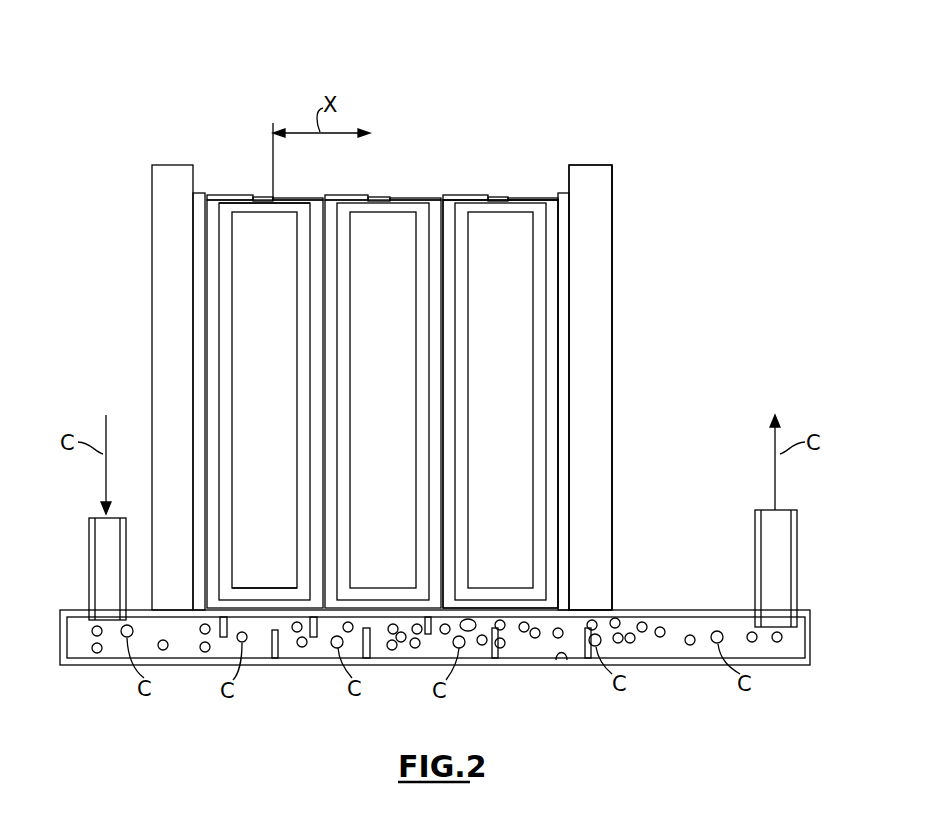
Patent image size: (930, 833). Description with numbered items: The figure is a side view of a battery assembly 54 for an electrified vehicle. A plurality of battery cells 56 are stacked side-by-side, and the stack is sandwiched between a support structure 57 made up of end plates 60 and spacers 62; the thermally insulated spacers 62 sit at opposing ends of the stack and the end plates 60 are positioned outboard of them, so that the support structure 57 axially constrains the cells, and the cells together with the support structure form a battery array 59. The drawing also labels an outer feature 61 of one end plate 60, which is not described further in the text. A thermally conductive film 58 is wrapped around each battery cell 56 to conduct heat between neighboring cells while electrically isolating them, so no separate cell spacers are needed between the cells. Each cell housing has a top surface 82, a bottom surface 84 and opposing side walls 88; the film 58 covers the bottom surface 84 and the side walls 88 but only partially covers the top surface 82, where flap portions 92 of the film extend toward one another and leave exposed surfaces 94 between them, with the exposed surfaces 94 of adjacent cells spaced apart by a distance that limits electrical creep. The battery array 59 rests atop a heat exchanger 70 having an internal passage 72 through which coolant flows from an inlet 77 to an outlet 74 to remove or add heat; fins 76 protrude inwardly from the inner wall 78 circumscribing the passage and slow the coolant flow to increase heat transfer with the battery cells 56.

The battery assembly 54 is at (449, 44).
The battery cells 56 is at (279, 296).
The support structure 57 is at (610, 148).
The thermally conductive film 58 is at (208, 285).
The battery array 59 is at (470, 140).
The end plates 60 is at (153, 305).
The outer surface of end plate 61 is at (612, 192).
The spacers 62 is at (198, 200).
The heat exchanger 70 is at (80, 666).
The internal passage 72 is at (314, 658).
The outlet 74 is at (796, 542).
The fins 76 is at (213, 640).
The inlet 77 is at (96, 543).
The inner wall 78 is at (560, 658).
The top surface 82 is at (262, 211).
The bottom surface 84 is at (243, 590).
The opposing side walls 88 is at (297, 258).
The flap portions 92 is at (232, 196).
The exposed surfaces 94 is at (267, 197).